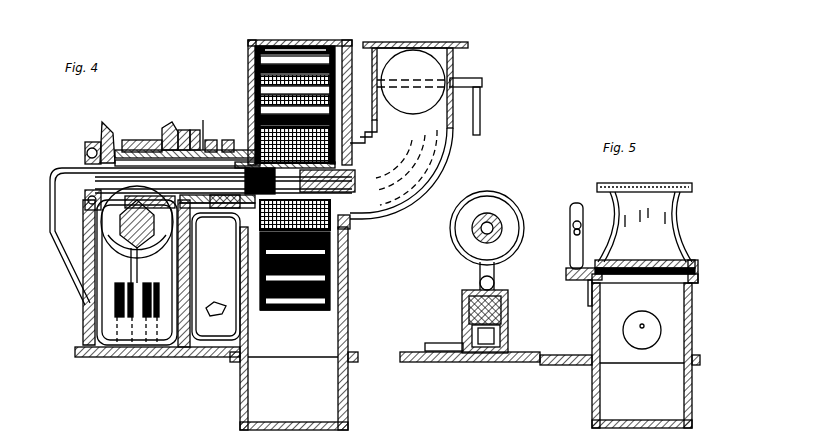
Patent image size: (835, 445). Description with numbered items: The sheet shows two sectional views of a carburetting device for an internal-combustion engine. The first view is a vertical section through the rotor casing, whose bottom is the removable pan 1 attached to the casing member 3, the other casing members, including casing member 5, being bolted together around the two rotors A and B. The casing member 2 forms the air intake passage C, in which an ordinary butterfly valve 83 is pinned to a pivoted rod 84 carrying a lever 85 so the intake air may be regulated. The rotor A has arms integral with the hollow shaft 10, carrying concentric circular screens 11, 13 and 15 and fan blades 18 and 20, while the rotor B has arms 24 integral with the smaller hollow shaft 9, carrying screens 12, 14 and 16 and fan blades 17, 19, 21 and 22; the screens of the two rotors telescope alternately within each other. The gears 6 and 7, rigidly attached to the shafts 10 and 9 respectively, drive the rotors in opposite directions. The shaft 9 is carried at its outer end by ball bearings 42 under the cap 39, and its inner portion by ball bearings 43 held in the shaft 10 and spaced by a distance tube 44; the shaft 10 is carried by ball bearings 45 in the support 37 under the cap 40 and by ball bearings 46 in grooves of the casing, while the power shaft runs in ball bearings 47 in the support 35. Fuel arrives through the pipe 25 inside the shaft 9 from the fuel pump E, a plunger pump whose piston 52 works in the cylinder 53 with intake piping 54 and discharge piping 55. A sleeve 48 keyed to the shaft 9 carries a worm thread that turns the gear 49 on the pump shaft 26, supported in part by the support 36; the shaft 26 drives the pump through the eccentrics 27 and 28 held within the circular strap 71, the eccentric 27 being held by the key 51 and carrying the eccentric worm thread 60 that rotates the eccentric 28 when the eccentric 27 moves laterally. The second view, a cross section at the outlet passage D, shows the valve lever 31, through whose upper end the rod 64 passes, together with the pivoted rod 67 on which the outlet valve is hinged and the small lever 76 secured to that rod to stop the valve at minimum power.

In FIG. 4, the removable pan 1 is at (240, 398).
In FIG. 5, the removable pan 1 is at (620, 391).
In FIG. 4, the casing member 2 is at (446, 142).
In FIG. 4, the casing member 3 is at (353, 102).
In FIG. 5, the casing member 3 is at (694, 310).
In FIG. 4, the casing member 5 is at (306, 36).
In FIG. 5, the casing member 5 is at (645, 227).
In FIG. 4, the gear 6 is at (168, 129).
In FIG. 4, the gear 7 is at (104, 125).
In FIG. 4, the hollow shaft 9 is at (205, 210).
In FIG. 4, the hollow shaft 10 is at (225, 189).
In FIG. 4, the circular screen 11 is at (355, 232).
In FIG. 4, the circular screen 12 is at (371, 249).
In FIG. 4, the circular screen 13 is at (262, 110).
In FIG. 4, the circular screen 14 is at (262, 90).
In FIG. 4, the circular screen 15 is at (262, 80).
In FIG. 4, the circular screen 16 is at (262, 60).
In FIG. 4, the fan blade 17 is at (262, 130).
In FIG. 4, the fan blade 18 is at (348, 258).
In FIG. 4, the fan blade 19 is at (262, 99).
In FIG. 4, the fan blade 20 is at (348, 284).
In FIG. 4, the fan blade 21 is at (262, 70).
In FIG. 4, the fan blade 22 is at (250, 46).
In FIG. 4, the arm 24 is at (348, 320).
In FIG. 4, the fuel pipe 25 is at (105, 247).
In FIG. 4, the pump shaft 26 is at (478, 230).
In FIG. 4, the eccentric 27 is at (500, 243).
In FIG. 4, the eccentric 28 is at (529, 216).
In FIG. 5, the valve lever 31 is at (578, 248).
In FIG. 4, the support 35 is at (145, 318).
In FIG. 4, the support 36 is at (145, 272).
In FIG. 4, the support 37 is at (210, 312).
In FIG. 4, the cap 39 is at (88, 146).
In FIG. 4, the cap 40 is at (173, 126).
In FIG. 4, the ball bearings 42 is at (86, 197).
In FIG. 4, the ball bearings 43 is at (211, 139).
In FIG. 4, the distance tube 44 is at (204, 126).
In FIG. 4, the ball bearings 45 is at (183, 130).
In FIG. 4, the ball bearings 46 is at (227, 186).
In FIG. 4, the ball bearings 47 is at (87, 154).
In FIG. 4, the sleeve 48 is at (150, 150).
In FIG. 4, the gear 49 is at (112, 228).
In FIG. 4, the key 51 is at (478, 234).
In FIG. 4, the piston 52 is at (503, 310).
In FIG. 5, the piston 52 is at (642, 330).
In FIG. 4, the cylinder 53 is at (500, 336).
In FIG. 4, the intake piping 54 is at (427, 346).
In FIG. 4, the discharge piping 55 is at (88, 323).
In FIG. 4, the eccentric worm thread 60 is at (488, 214).
In FIG. 5, the rod 64 is at (573, 225).
In FIG. 5, the pivoted rod 67 is at (700, 276).
In FIG. 4, the circular strap 71 is at (85, 262).
In FIG. 5, the small lever 76 is at (590, 299).
In FIG. 4, the butterfly valve 83 is at (440, 70).
In FIG. 4, the pivoted rod 84 is at (476, 79).
In FIG. 4, the lever 85 is at (480, 120).
In FIG. 4, the rotor A is at (216, 276).
In FIG. 4, the rotor B is at (371, 229).
In FIG. 4, the air intake passage C is at (412, 35).
In FIG. 5, the outlet passage D is at (644, 181).
In FIG. 4, the fuel pump E is at (462, 306).